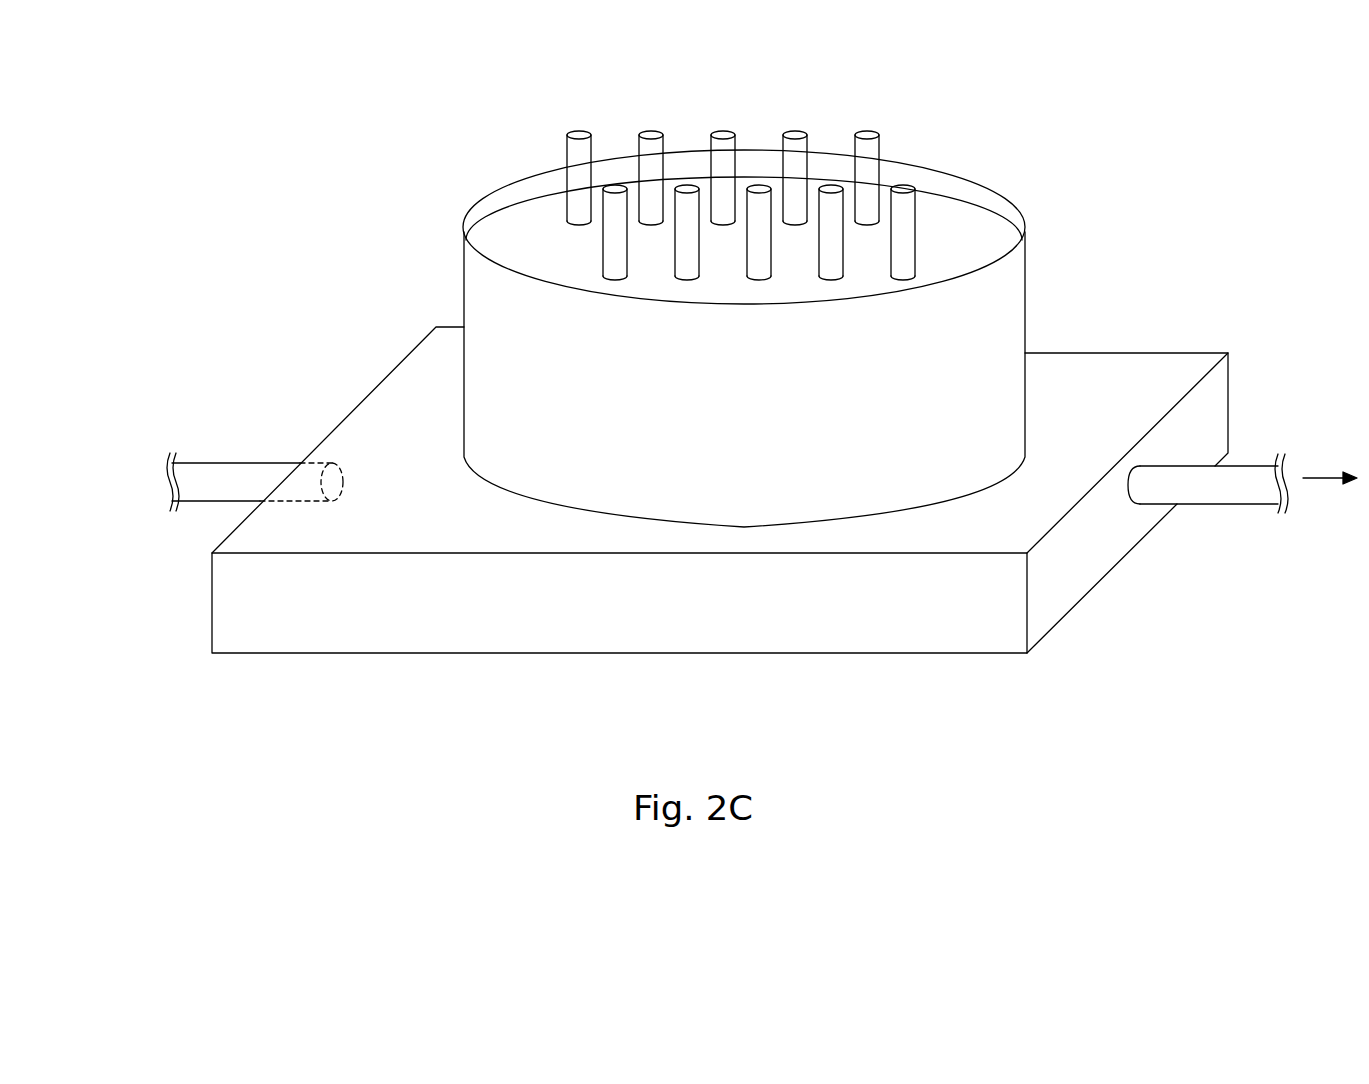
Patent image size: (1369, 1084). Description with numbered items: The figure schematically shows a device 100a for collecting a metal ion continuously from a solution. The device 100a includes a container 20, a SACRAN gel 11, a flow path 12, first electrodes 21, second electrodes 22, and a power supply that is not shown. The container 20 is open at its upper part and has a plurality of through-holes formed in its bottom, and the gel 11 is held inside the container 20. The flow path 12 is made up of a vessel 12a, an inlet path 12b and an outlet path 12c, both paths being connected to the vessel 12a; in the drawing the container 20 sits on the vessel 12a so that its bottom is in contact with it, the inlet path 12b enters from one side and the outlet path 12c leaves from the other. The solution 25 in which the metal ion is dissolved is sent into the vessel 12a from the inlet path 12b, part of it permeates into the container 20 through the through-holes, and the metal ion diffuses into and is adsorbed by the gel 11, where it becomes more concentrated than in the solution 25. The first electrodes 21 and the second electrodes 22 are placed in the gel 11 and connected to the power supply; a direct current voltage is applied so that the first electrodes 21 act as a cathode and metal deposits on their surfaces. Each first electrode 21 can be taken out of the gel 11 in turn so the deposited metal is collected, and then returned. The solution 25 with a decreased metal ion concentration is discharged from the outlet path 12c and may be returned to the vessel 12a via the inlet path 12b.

The device 100a is at (254, 136).
The SACRAN gel 11 is at (515, 240).
The flow path 12 is at (1217, 717).
The vessel 12a is at (617, 653).
The inlet path 12b is at (198, 501).
The outlet path 12c is at (1189, 504).
The container 20 is at (1025, 232).
The first electrodes 21 is at (579, 133).
The second electrodes 22 is at (615, 187).
The solution 25 is at (147, 476).